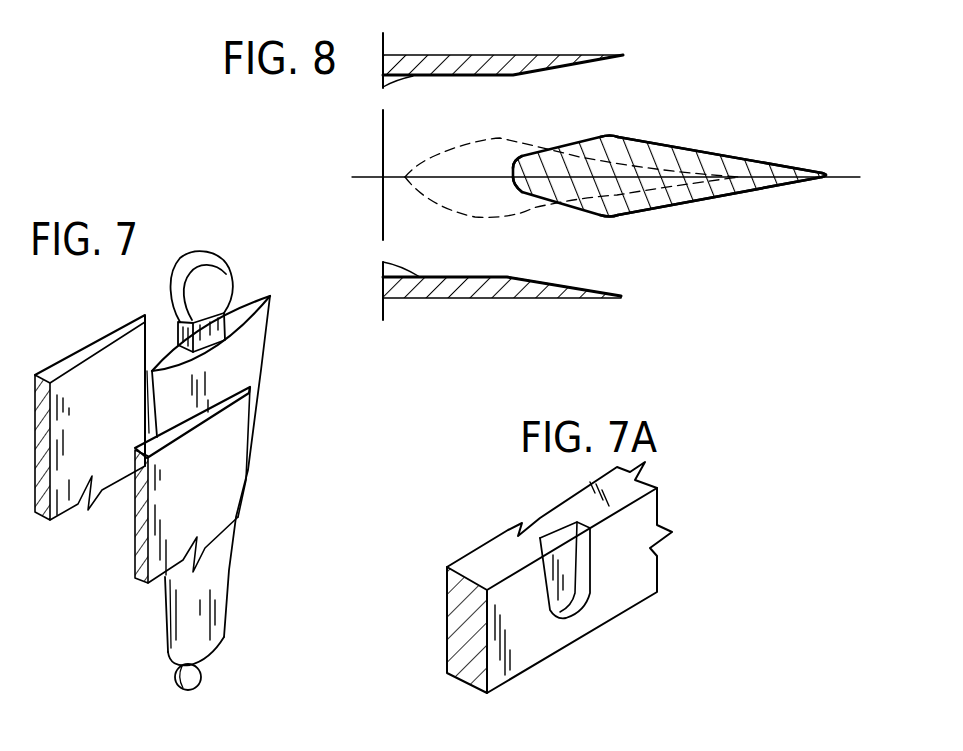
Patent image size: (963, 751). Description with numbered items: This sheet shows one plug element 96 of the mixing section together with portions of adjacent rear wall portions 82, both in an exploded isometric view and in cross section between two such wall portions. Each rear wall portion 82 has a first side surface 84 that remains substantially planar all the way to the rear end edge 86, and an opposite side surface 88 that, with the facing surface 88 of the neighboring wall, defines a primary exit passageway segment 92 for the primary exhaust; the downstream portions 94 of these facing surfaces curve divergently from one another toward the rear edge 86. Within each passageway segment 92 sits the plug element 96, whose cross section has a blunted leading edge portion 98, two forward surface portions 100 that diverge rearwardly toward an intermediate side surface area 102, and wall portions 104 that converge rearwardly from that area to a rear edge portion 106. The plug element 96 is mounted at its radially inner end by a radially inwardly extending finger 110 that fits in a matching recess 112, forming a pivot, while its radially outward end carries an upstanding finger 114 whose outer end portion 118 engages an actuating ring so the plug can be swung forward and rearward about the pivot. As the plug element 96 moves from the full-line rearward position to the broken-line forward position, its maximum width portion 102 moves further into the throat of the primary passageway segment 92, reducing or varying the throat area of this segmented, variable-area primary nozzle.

In FIG. 8, the rear wall portion 82 is at (550, 172).
In FIG. 8, the first side surface 84 is at (550, 172).
In FIG. 7, the first side surface 84 is at (235, 485).
In FIG. 8, the rear end edge 86 is at (550, 172).
In FIG. 7, the rear end edge 86 is at (254, 414).
In FIG. 8, the opposite side surface 88 is at (385, 110).
In FIG. 7, the opposite side surface 88 is at (88, 404).
In FIG. 8, the primary exit passageway segment 92 is at (580, 98).
In FIG. 8, the downstream portion 94 is at (450, 56).
In FIG. 7, the downstream portion 94 is at (100, 375).
In FIG. 8, the plug element 96 is at (425, 160).
In FIG. 7, the plug element 96 is at (220, 568).
In FIG. 8, the leading edge portion 98 is at (510, 175).
In FIG. 7, the leading edge portion 98 is at (165, 603).
In FIG. 8, the forward surface portion 100 is at (527, 160).
In FIG. 8, the intermediate side surface area 102 is at (612, 137).
In FIG. 8, the wall portion 104 is at (742, 159).
In FIG. 8, the rear edge portion 106 is at (830, 175).
In FIG. 7, the rear edge portion 106 is at (238, 546).
In FIG. 7, the radially inwardly extending finger 110 is at (200, 672).
In FIG. 7A, the recess 112 is at (540, 538).
In FIG. 7, the upstanding finger 114 is at (221, 316).
In FIG. 7, the outer end portion 118 is at (215, 275).